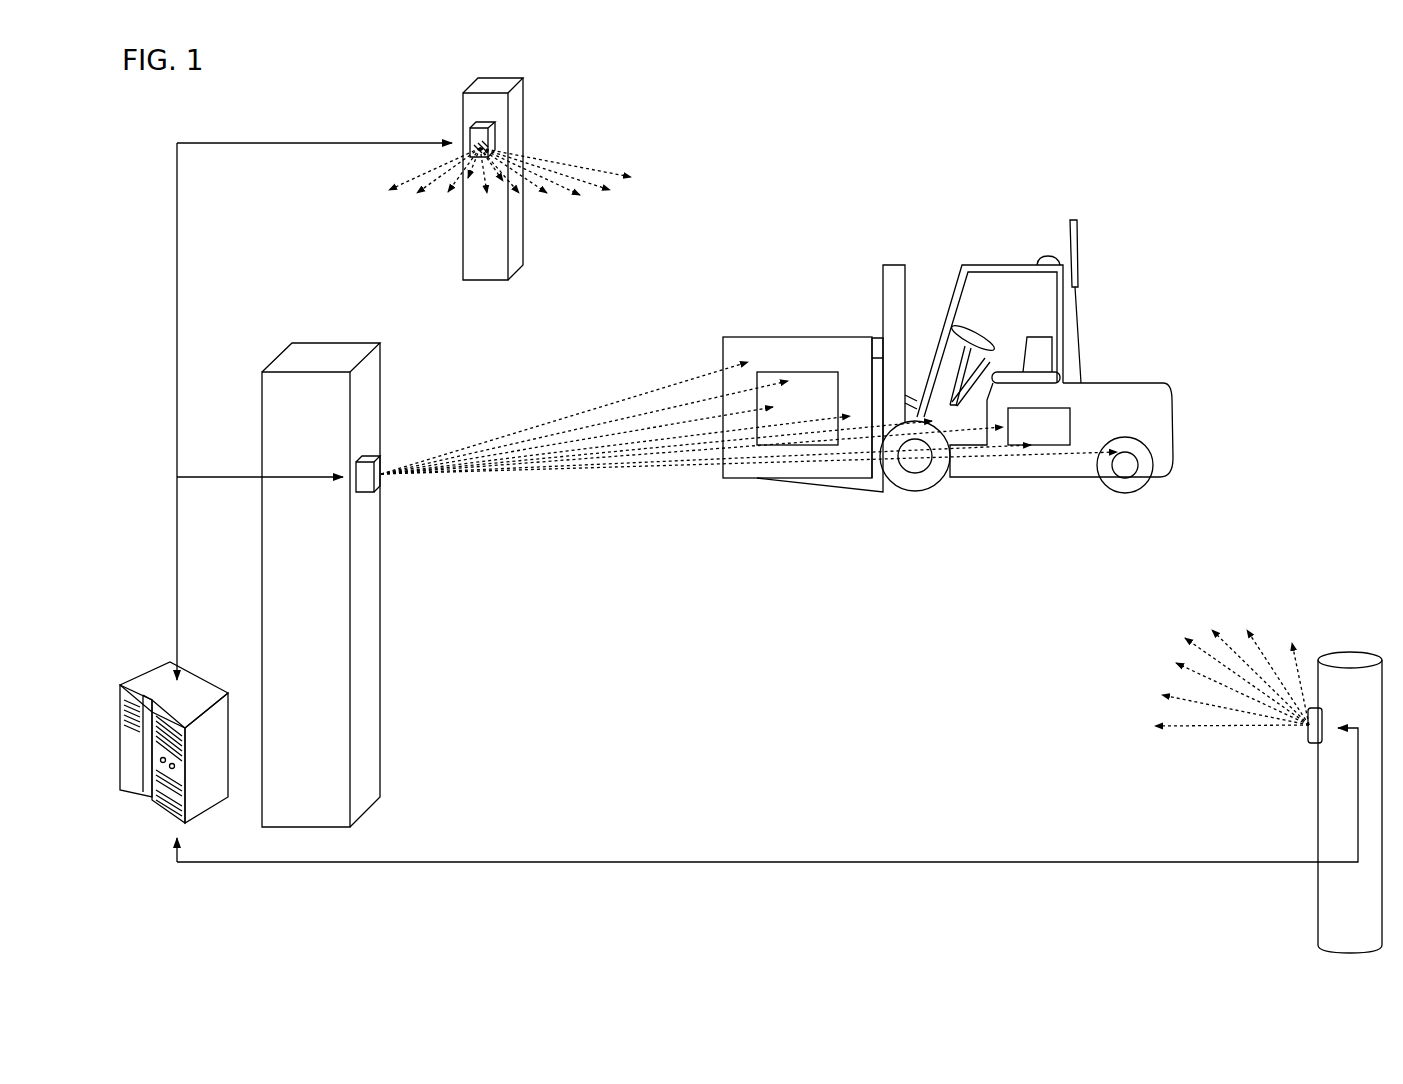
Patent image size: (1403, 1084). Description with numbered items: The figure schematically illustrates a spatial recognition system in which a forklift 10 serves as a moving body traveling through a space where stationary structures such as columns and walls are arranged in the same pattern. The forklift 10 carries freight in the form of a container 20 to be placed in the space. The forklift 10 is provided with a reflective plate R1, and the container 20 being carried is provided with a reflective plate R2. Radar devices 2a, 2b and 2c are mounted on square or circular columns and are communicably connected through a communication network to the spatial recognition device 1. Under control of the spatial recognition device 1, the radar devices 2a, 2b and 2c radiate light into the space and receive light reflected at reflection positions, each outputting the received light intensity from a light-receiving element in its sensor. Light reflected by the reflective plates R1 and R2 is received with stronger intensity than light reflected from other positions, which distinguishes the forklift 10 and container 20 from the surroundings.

The spatial recognition device 1 is at (174, 715).
The radar device 2a is at (736, 459).
The radar device 2b is at (510, 153).
The radar device 2c is at (1238, 707).
The forklift 10 is at (965, 382).
The container 20 is at (797, 376).
The reflective plate R1 is at (1076, 398).
The reflective plate R2 is at (797, 366).